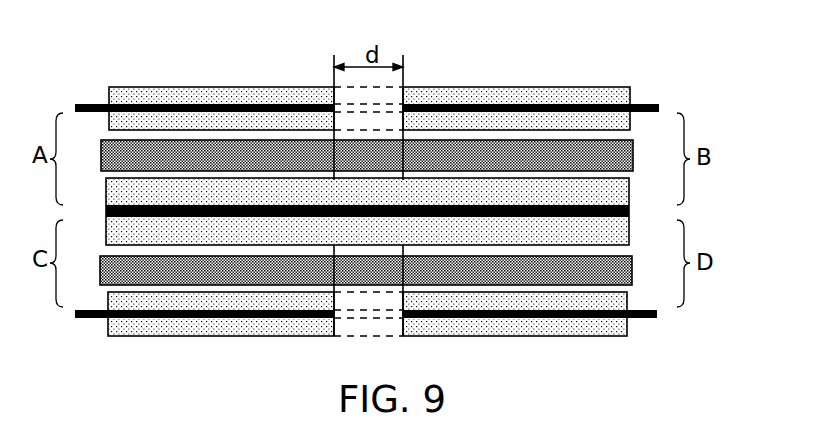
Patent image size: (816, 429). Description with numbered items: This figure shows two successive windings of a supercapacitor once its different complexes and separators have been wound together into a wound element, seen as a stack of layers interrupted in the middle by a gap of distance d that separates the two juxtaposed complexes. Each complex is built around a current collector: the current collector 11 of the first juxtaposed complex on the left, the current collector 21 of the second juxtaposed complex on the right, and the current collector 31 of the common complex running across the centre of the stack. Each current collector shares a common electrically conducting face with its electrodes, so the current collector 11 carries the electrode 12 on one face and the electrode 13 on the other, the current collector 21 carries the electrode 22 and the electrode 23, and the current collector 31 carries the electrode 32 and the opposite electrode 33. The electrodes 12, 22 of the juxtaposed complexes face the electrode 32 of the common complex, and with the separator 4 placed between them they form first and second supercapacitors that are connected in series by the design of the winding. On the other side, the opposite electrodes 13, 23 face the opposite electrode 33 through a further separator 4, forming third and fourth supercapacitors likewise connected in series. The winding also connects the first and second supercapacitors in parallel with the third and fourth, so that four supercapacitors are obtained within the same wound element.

The separator 4 is at (138, 147).
The current collector 11 is at (90, 103).
The electrode 12 is at (230, 112).
The electrode 13 is at (185, 90).
The current collector 21 is at (647, 107).
The electrode 22 is at (562, 117).
The electrode 23 is at (493, 93).
The current collector 31 is at (107, 213).
The electrode 32 is at (137, 183).
The electrode 33 is at (137, 238).